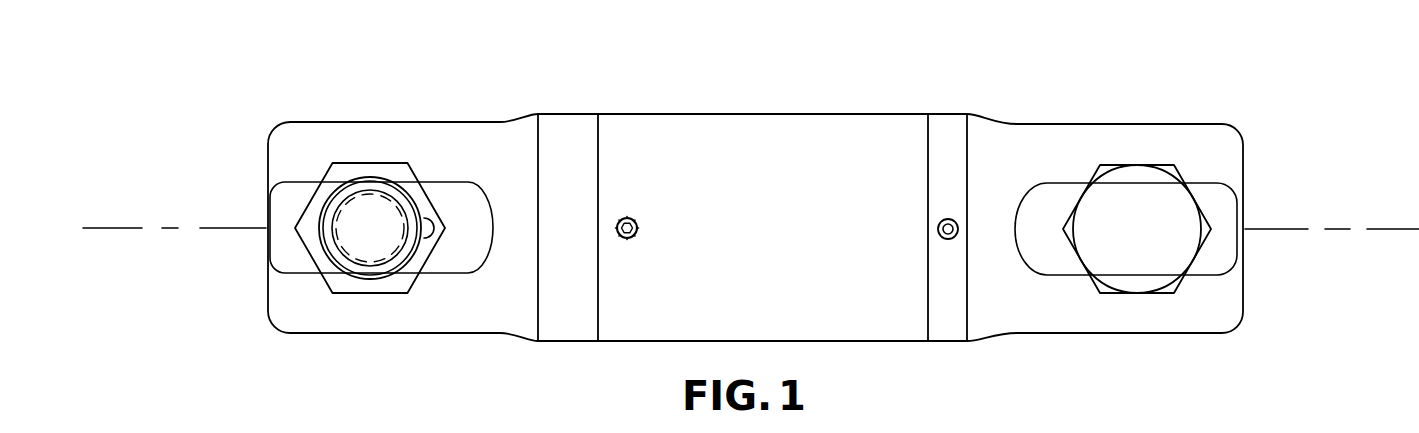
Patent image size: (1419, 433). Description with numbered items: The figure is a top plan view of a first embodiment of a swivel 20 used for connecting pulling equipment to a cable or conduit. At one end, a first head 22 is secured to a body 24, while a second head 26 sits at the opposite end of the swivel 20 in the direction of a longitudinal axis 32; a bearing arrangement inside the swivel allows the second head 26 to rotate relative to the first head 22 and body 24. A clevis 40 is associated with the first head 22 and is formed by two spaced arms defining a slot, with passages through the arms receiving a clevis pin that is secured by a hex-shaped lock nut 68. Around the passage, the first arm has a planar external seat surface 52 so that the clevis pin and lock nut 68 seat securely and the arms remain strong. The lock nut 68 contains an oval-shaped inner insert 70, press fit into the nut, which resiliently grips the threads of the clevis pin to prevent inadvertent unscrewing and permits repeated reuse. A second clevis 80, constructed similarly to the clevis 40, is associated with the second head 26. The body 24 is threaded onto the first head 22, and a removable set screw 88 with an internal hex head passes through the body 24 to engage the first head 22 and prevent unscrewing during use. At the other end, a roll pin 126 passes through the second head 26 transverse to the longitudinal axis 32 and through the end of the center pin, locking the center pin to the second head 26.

The swivel 20 is at (231, 99).
The first head 22 is at (451, 349).
The body 24 is at (713, 102).
The second head 26 is at (1050, 107).
The longitudinal axis 32 is at (1333, 230).
The clevis 40 is at (268, 330).
The planar external seat surface 52 is at (307, 273).
The lock nut 68 is at (345, 165).
The inner insert 70 is at (407, 190).
The second clevis 80 is at (1182, 333).
The set screw 88 is at (629, 218).
The roll pin 126 is at (949, 218).